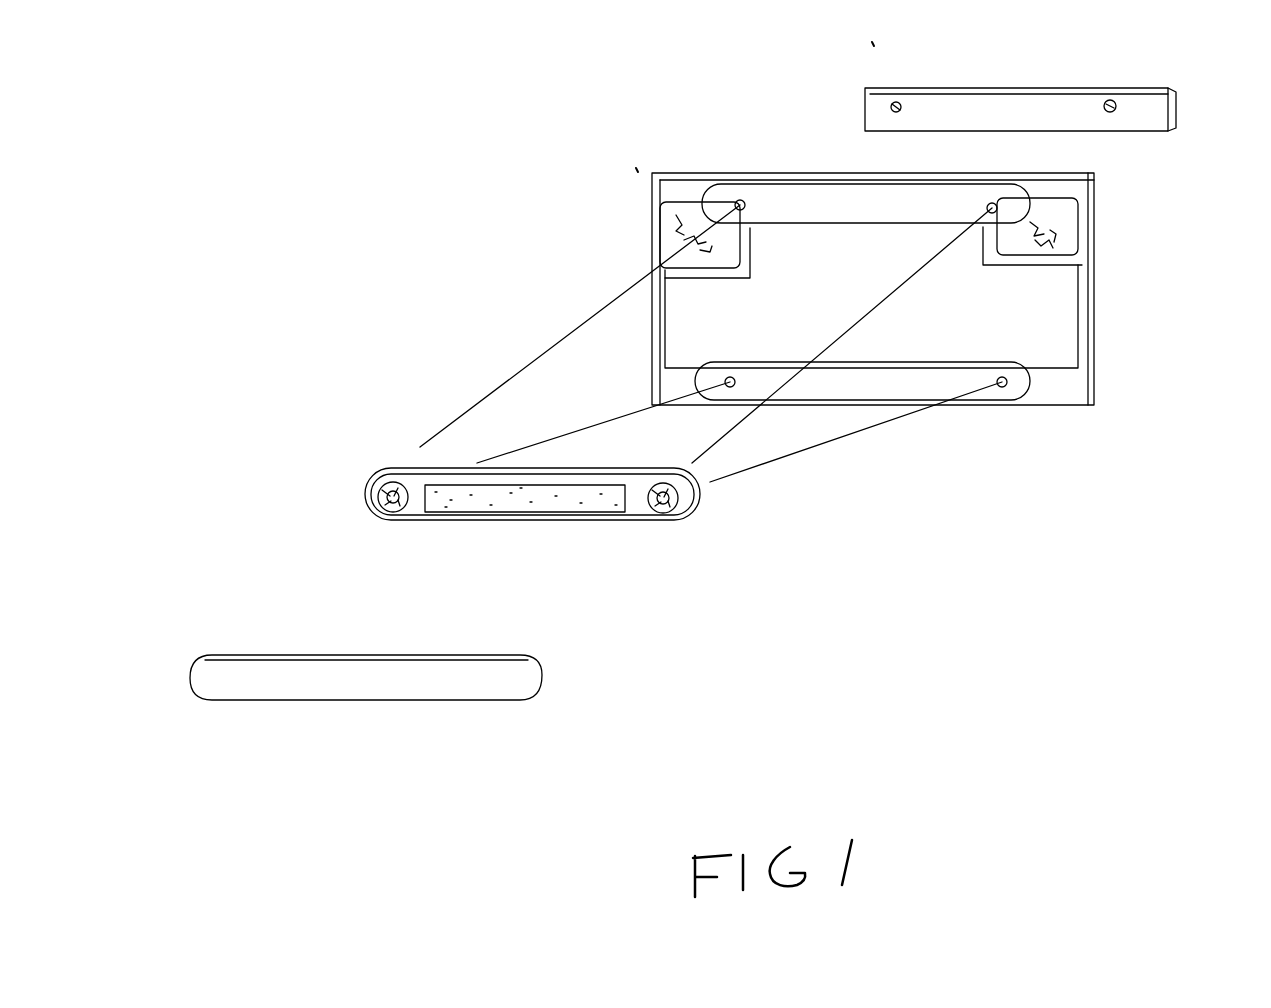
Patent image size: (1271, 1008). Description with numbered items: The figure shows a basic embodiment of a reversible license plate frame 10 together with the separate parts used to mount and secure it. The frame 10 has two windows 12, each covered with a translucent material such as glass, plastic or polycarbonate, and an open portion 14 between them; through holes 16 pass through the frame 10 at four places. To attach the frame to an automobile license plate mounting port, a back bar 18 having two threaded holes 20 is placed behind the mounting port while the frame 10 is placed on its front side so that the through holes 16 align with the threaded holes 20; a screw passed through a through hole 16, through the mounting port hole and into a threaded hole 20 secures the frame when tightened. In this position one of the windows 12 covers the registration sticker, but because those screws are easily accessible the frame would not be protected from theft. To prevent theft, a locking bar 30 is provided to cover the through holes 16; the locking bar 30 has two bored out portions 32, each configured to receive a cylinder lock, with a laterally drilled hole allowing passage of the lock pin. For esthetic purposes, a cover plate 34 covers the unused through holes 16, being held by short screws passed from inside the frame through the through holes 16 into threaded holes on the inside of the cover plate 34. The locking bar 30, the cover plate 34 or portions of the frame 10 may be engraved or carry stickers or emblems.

The reversible license plate frame 10 is at (1145, 190).
The windows 12 is at (668, 222).
The open portion 14 is at (1132, 350).
The through holes 16 is at (1002, 382).
The back bar 18 is at (1216, 88).
The threaded holes 20 is at (900, 105).
The locking bar 30 is at (760, 512).
The bored out portions 32 is at (640, 515).
The cover plate 34 is at (555, 642).